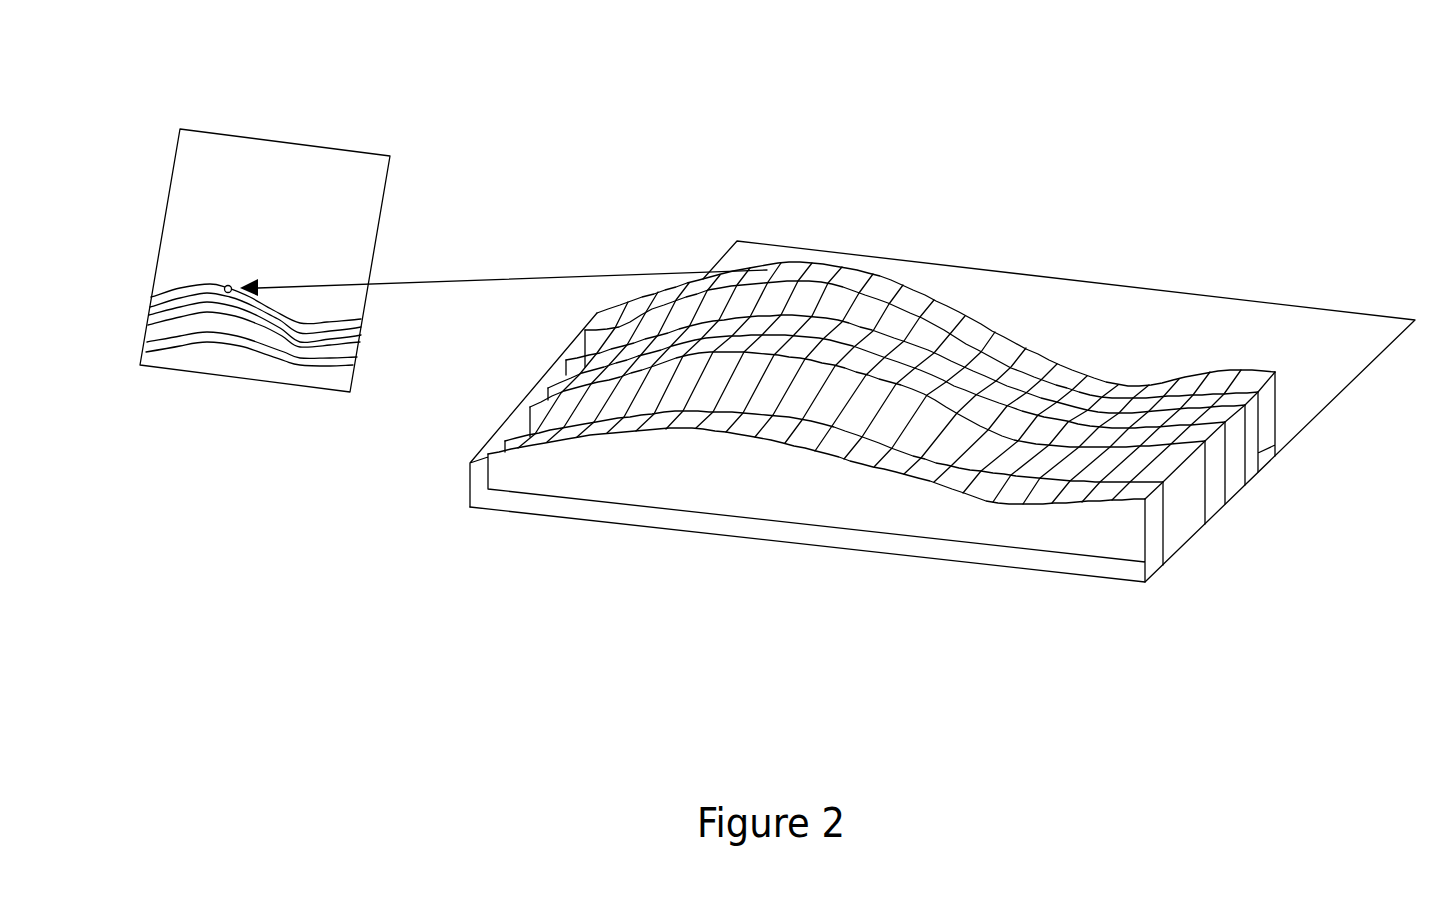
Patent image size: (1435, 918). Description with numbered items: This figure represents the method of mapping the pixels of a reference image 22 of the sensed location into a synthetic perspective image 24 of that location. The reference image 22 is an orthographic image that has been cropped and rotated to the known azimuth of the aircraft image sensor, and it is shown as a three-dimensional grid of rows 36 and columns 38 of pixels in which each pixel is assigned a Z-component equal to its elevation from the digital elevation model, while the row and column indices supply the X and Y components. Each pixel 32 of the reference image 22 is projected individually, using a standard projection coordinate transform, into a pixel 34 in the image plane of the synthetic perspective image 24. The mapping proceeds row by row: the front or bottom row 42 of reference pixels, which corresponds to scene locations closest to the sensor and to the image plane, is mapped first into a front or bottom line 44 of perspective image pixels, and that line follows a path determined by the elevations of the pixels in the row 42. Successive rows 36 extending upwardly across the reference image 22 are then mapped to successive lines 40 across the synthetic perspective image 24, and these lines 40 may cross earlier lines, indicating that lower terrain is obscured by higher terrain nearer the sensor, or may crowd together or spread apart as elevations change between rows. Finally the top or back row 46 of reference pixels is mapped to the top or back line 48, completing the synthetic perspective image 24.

The reference image 22 is at (1040, 355).
The synthetic perspective image 24 is at (289, 220).
The pixel of the reference image 32 is at (777, 266).
The pixel in the image plane of the synthetic perspective image 34 is at (228, 280).
The rows of the reference image pixels 36 is at (1222, 517).
The columns of the reference image pixels 38 is at (843, 478).
The lines of synthetic perspective image pixels 40 is at (368, 347).
The front row or bottom row of the reference image pixels 42 is at (1153, 500).
The front line or bottom line of the synthetic perspective image pixels 44 is at (365, 366).
The top or back row of the reference image pixels 46 is at (1273, 388).
The top or back line of the synthetic perspective image pixels 48 is at (372, 315).